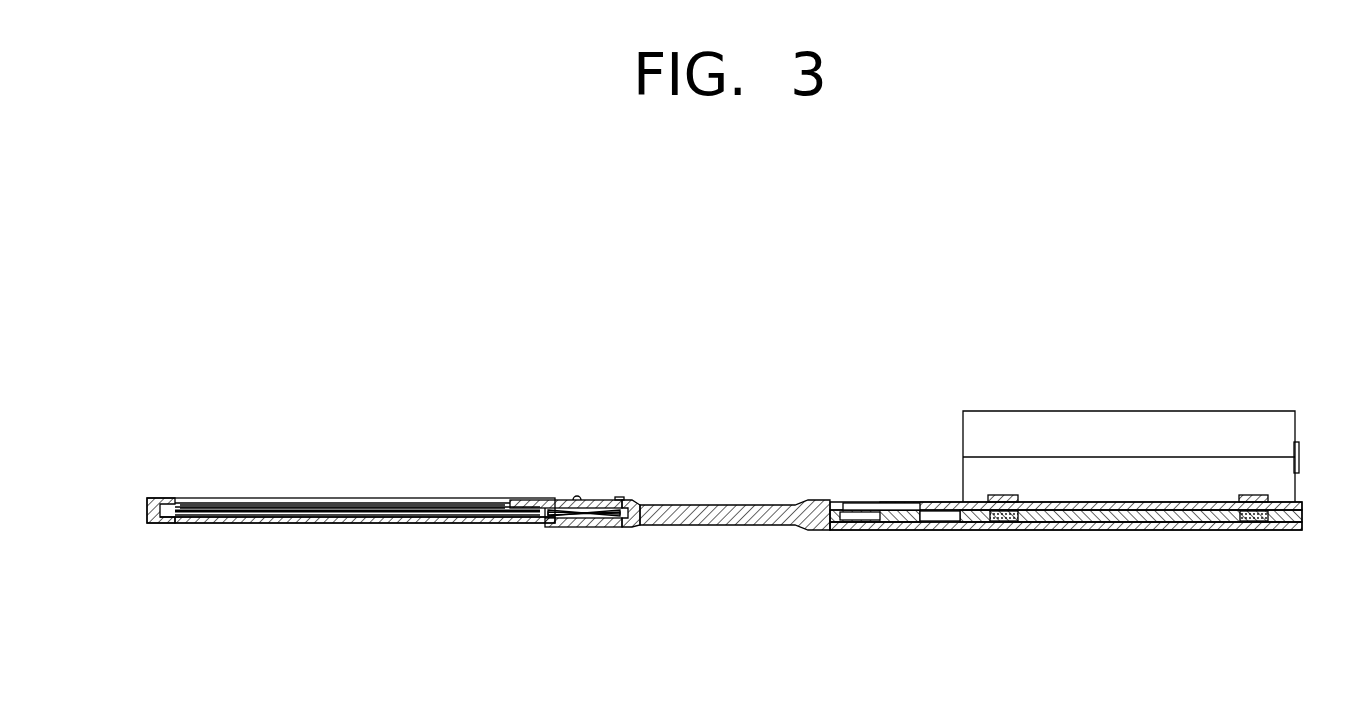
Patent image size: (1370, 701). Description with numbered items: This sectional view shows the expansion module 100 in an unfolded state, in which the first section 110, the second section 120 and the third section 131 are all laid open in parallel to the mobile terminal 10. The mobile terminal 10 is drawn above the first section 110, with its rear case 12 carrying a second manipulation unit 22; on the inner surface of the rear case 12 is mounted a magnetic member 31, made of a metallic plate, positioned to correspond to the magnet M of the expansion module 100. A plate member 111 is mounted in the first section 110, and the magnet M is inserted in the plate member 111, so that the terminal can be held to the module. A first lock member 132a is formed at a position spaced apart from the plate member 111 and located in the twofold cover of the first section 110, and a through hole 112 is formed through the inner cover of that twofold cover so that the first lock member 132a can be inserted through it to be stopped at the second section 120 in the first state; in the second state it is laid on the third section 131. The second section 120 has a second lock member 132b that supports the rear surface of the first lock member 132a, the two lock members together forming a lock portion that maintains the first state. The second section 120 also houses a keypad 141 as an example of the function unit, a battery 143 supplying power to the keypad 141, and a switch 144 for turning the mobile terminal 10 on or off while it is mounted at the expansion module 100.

The expansion module 100 is at (434, 405).
The mobile terminal 10 is at (1310, 387).
The rear case 12 is at (1108, 470).
The second manipulation unit 22 is at (1300, 458).
The magnetic member 31 is at (1003, 495).
The first section 110 is at (1175, 549).
The plate member 111 is at (1097, 530).
The through hole 112 is at (886, 507).
The second section 120 is at (342, 546).
The third section 131 is at (731, 540).
The first lock member 132a is at (892, 530).
The second lock member 132b is at (622, 497).
The keypad 141 is at (265, 502).
The battery 143 is at (577, 525).
The switch 144 is at (577, 495).
The magnet M is at (1005, 530).